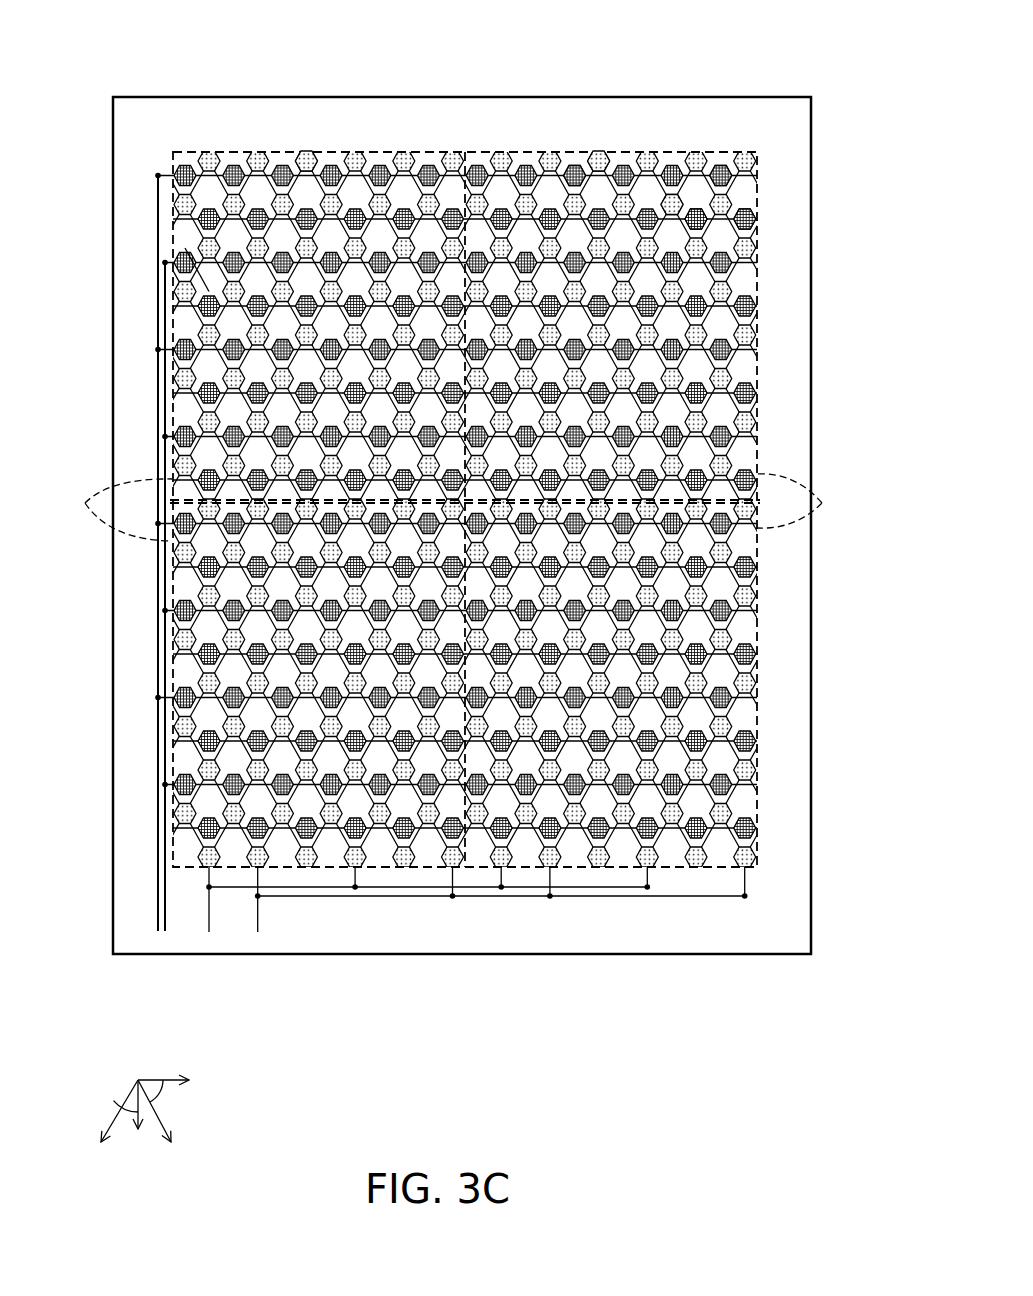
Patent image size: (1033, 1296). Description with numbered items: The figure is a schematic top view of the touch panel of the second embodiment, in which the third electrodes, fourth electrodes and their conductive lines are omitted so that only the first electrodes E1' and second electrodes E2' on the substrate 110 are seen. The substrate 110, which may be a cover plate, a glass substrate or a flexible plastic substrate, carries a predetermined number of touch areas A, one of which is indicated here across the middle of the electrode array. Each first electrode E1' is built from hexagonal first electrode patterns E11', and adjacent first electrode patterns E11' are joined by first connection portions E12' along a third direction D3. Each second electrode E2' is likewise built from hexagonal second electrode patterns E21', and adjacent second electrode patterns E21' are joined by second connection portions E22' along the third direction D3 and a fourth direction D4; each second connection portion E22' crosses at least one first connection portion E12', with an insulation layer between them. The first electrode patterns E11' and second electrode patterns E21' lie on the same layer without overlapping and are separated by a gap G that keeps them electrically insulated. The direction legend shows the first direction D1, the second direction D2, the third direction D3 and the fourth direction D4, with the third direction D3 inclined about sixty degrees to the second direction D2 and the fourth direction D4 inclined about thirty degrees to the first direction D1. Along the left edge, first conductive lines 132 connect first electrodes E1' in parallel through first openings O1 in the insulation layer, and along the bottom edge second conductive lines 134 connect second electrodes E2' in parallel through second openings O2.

The substrate 110 is at (170, 107).
The first conductive lines 132 is at (158, 937).
The second conductive lines 134 is at (207, 933).
The first openings O1 is at (154, 176).
The second openings O2 is at (451, 899).
The gap G is at (204, 277).
The touch areas A is at (456, 507).
The first electrodes E1' is at (753, 117).
The second electrodes E2' is at (455, 88).
The first electrode patterns E11' is at (734, 120).
The first connection portions E12' is at (679, 142).
The second electrode patterns E21' is at (609, 113).
The second connection portions E22' is at (553, 120).
The first direction D1 is at (135, 1125).
The second direction D2 is at (180, 1080).
The third direction D3 is at (166, 1128).
The fourth direction D4 is at (110, 1127).